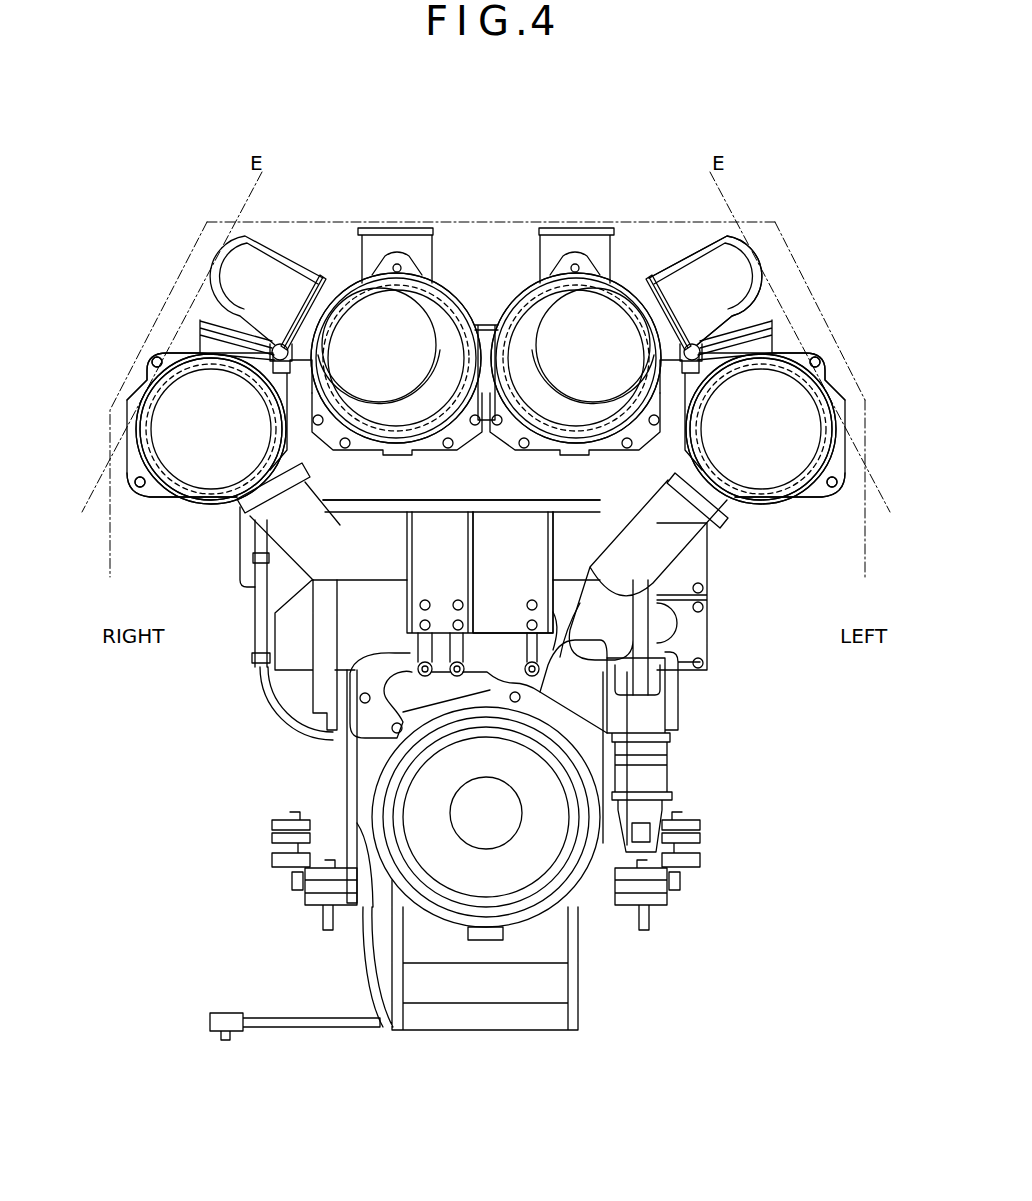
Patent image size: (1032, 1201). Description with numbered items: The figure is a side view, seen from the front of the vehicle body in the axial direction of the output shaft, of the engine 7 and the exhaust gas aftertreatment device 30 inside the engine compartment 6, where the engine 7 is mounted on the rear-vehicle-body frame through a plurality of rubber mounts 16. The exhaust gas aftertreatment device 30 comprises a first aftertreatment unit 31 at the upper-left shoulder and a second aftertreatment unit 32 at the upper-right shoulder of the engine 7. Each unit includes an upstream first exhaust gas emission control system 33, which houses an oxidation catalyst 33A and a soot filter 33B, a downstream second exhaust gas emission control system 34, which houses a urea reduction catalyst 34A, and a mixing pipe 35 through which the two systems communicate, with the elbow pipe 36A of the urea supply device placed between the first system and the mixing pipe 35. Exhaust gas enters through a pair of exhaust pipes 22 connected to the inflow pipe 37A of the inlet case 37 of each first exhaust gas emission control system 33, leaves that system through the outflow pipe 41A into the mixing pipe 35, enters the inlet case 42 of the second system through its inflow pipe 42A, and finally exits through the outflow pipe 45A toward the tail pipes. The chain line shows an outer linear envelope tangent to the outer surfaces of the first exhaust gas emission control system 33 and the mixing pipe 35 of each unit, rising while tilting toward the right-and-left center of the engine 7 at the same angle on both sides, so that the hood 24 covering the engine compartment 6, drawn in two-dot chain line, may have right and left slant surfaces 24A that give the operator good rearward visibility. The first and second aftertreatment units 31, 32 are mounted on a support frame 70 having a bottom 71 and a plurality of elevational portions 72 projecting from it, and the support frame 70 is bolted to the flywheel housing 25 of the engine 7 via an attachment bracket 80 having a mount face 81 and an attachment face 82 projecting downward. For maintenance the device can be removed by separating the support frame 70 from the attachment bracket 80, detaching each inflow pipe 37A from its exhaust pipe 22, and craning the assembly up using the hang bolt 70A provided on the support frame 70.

The engine compartment 6 is at (818, 585).
The engine 7 is at (612, 160).
The rubber mounts 16 is at (272, 860).
The exhaust pipes 22 is at (290, 535).
The hood 24 is at (485, 222).
The slant surfaces 24A is at (825, 300).
The flywheel housing 25 is at (580, 700).
The exhaust gas aftertreatment device 30 is at (326, 206).
The first aftertreatment unit 31 is at (810, 347).
The second aftertreatment unit 32 is at (176, 319).
The first exhaust gas emission control system 33 is at (162, 420).
The oxidation catalyst 33A is at (205, 501).
The soot filter 33B is at (486, 453).
The second exhaust gas emission control system 34 is at (518, 325).
The urea reduction catalyst 34A is at (395, 456).
The mixing pipe 35 is at (215, 255).
The elbow pipe 36A is at (215, 300).
The inlet case 37 is at (160, 445).
The inflow pipe 37A is at (297, 478).
The outflow pipe 41A is at (208, 345).
The inlet case 42 is at (415, 300).
The inflow pipe 42A is at (338, 290).
The outflow pipe 45A is at (415, 236).
The support frame 70 is at (513, 572).
The hang bolt 70A is at (278, 343).
The bottom 71 is at (430, 497).
The elevational portions 72 is at (456, 540).
The attachment bracket 80 is at (488, 624).
The mount face 81 is at (480, 572).
The attachment face 82 is at (562, 614).